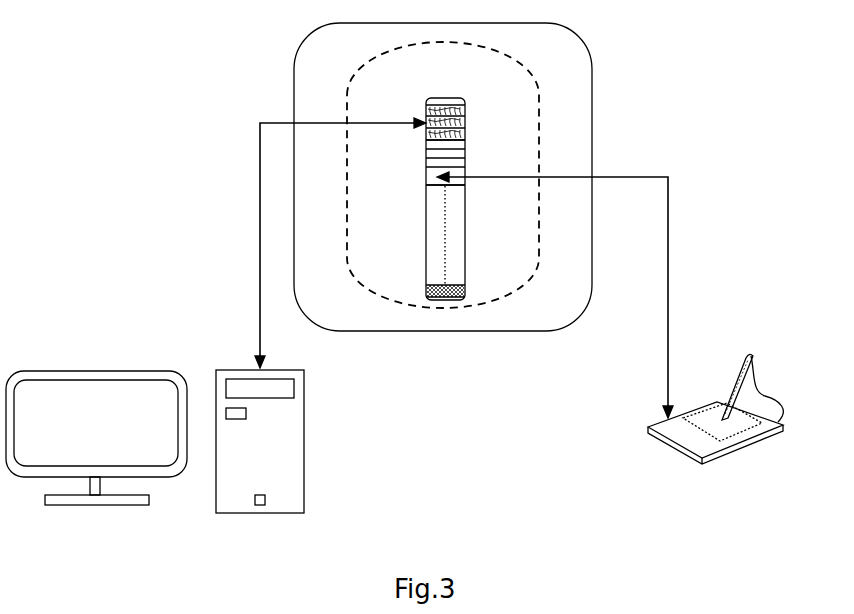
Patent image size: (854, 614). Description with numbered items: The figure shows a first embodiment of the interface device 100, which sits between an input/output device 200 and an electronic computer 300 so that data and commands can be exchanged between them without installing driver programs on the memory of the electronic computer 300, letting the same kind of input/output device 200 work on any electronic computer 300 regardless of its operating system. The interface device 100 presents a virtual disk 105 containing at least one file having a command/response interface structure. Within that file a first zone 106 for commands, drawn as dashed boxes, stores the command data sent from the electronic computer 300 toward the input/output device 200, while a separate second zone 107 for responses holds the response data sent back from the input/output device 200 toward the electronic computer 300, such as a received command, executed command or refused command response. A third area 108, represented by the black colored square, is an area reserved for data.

The interface device 100 is at (256, 99).
The virtual disk 105 is at (343, 123).
The first zone for commands 106 is at (540, 88).
The second zone for responses 107 is at (465, 176).
The third area for data 108 is at (540, 265).
The input/output device 200 is at (713, 440).
The electronic computer 300 is at (232, 475).